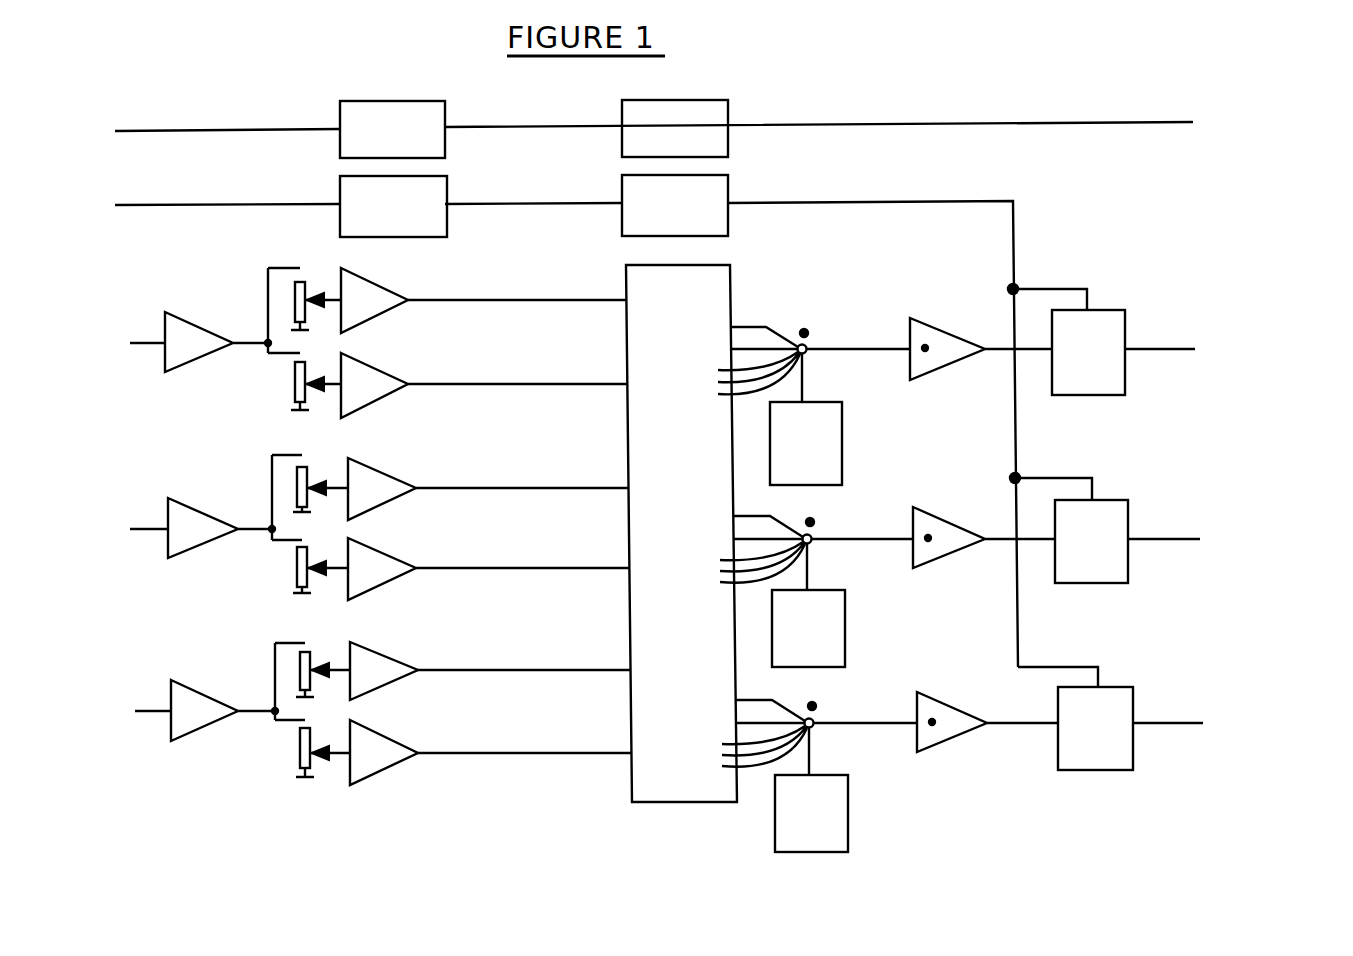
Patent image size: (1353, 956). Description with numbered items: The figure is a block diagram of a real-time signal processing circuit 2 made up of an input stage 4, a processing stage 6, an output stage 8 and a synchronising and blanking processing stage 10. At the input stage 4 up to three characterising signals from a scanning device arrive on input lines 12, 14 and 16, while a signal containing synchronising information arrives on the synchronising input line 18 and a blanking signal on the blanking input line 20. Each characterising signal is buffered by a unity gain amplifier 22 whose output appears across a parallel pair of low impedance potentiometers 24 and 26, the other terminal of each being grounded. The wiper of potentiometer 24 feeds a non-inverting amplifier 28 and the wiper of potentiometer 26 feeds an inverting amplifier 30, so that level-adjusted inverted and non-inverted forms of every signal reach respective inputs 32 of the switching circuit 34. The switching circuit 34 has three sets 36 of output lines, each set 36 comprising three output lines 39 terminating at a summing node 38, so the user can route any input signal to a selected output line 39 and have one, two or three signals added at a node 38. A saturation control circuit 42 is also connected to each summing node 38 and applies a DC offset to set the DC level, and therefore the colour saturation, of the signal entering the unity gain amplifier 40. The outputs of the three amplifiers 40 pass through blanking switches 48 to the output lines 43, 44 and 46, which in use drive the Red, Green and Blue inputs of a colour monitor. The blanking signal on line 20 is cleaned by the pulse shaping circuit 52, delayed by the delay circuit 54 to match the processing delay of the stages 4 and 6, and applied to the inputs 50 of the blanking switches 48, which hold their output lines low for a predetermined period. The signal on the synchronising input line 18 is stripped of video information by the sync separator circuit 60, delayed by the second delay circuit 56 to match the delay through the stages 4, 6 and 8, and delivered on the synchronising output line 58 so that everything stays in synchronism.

The real-time signal processing circuit 2 is at (1270, 101).
The input stage 4 is at (262, 802).
The processing stage 6 is at (580, 808).
The output stage 8 is at (1118, 815).
The synchronising and blanking processing stage 10 is at (778, 78).
The input line 12 is at (143, 345).
The input line 14 is at (148, 531).
The input line 16 is at (152, 713).
The synchronising input line 18 is at (213, 131).
The blanking input line 20 is at (222, 206).
The unity gain amplifier 22 is at (200, 340).
The potentiometer 24 is at (307, 292).
The potentiometer 26 is at (296, 402).
The non-inverting amplifier 28 is at (370, 296).
The inverting amplifier 30 is at (370, 385).
The input of switching circuit 32 is at (607, 305).
The switching circuit 34 is at (694, 352).
The set of output lines 36 is at (776, 322).
The summing node 38 is at (808, 345).
The output line 39 is at (745, 551).
The unity gain amplifier 40 is at (950, 356).
The saturation control circuit 42 is at (843, 436).
The output line 43 is at (1170, 349).
The output line 44 is at (1170, 539).
The output line 46 is at (1175, 723).
The blanking switch 48 is at (1125, 320).
The input of blanking switch 50 is at (1090, 292).
The pulse shaping circuit 52 is at (425, 193).
The delay circuit 54 is at (713, 199).
The second delay circuit 56 is at (672, 100).
The synchronising output line 58 is at (1097, 123).
The sync separator circuit 60 is at (395, 100).